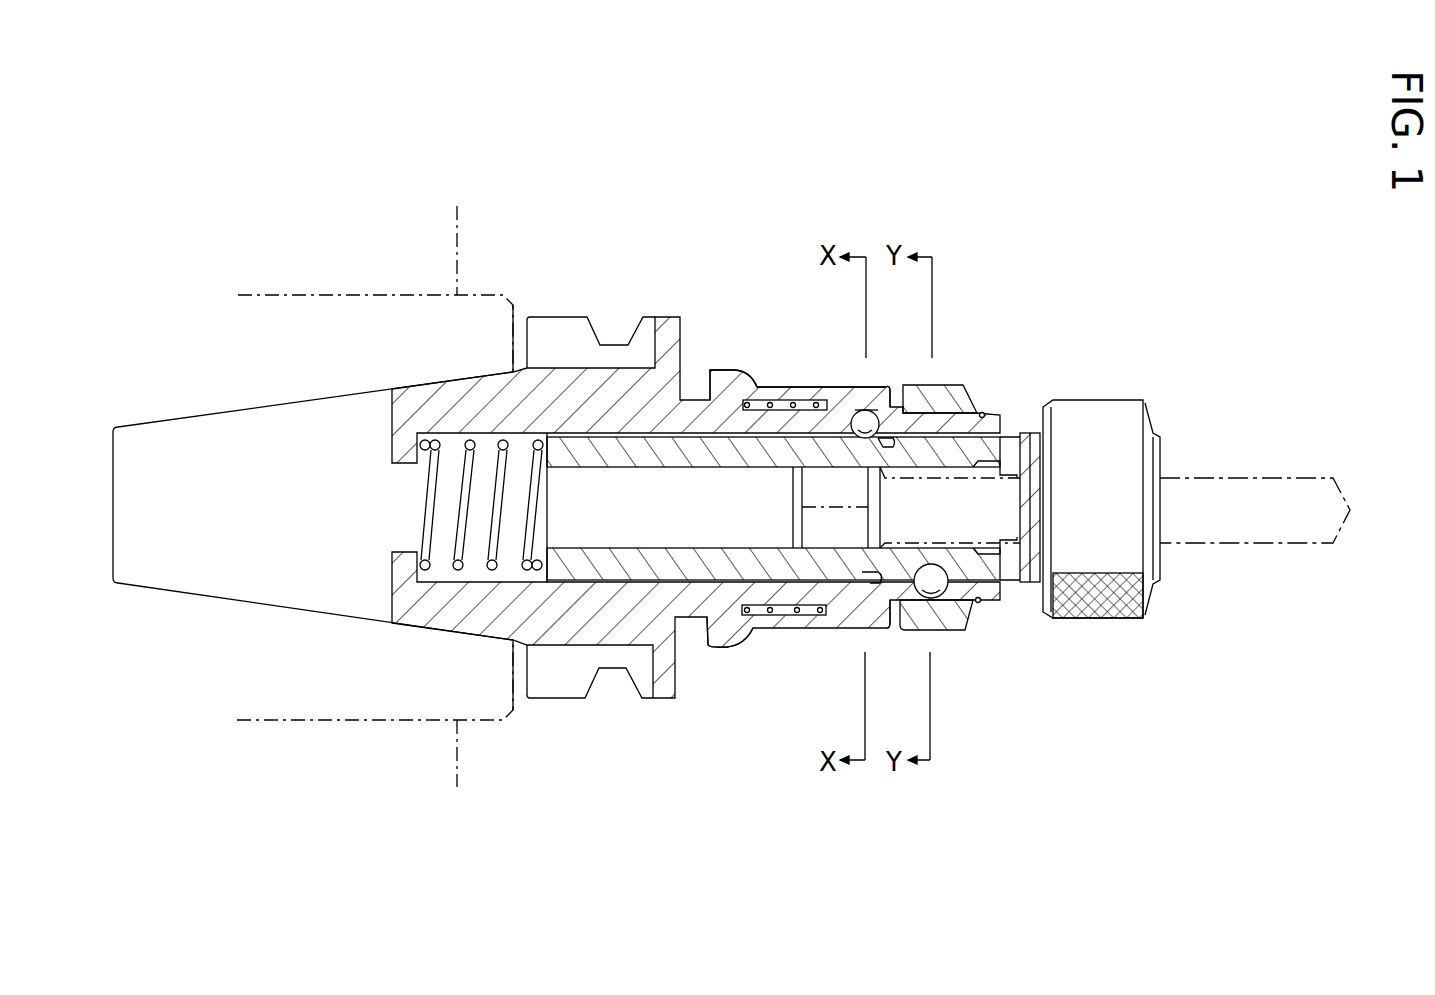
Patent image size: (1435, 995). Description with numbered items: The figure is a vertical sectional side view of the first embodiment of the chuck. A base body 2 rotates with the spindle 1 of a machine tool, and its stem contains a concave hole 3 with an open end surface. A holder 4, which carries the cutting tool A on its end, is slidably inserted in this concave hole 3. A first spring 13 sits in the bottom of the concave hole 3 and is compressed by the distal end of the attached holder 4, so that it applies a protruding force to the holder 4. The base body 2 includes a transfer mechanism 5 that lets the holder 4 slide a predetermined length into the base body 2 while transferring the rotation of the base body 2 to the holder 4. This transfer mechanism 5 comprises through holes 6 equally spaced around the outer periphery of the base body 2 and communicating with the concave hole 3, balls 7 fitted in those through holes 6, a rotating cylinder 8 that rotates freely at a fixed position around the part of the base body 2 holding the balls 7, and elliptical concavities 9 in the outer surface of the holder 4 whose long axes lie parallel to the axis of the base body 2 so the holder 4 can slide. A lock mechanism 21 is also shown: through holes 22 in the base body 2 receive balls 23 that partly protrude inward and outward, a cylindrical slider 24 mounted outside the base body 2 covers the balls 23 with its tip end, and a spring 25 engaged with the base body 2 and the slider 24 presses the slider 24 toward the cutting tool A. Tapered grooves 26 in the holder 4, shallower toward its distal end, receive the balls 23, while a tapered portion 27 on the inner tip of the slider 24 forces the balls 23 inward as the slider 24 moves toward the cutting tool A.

The spindle 1 is at (349, 710).
The base body 2 is at (578, 390).
The concave hole 3 is at (512, 578).
The holder 4 is at (688, 562).
The transfer mechanism 5 is at (935, 603).
The through holes 6 is at (925, 592).
The balls 7 is at (950, 603).
The rotating cylinder 8 is at (947, 397).
The concavities 9 is at (978, 598).
The first spring 13 is at (467, 440).
The lock mechanism 21 is at (840, 380).
The through holes 22 is at (853, 413).
The balls 23 is at (862, 400).
The cylindrical slider 24 is at (726, 380).
The spring 25 is at (768, 400).
The tapered grooves 26 is at (878, 442).
The tapered portion 27 is at (895, 408).
The cutting tool A is at (1240, 492).